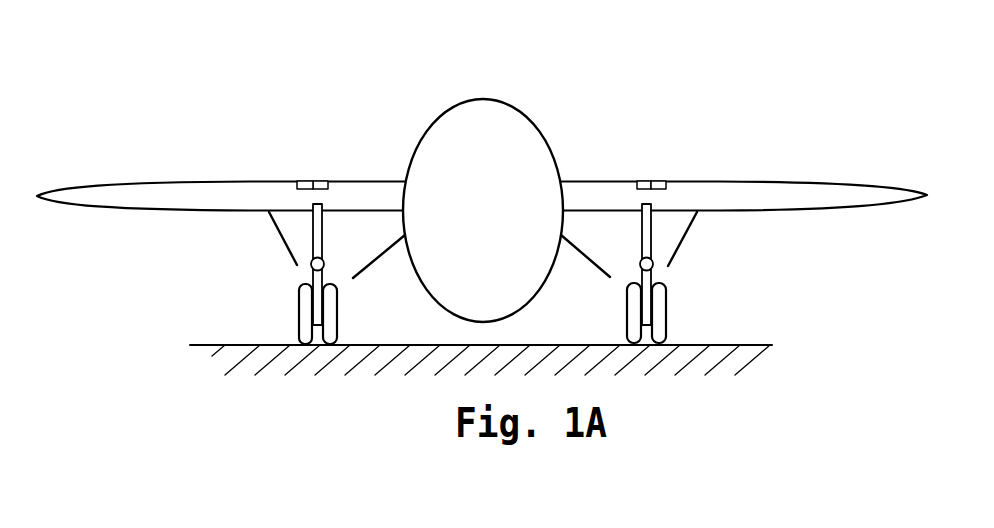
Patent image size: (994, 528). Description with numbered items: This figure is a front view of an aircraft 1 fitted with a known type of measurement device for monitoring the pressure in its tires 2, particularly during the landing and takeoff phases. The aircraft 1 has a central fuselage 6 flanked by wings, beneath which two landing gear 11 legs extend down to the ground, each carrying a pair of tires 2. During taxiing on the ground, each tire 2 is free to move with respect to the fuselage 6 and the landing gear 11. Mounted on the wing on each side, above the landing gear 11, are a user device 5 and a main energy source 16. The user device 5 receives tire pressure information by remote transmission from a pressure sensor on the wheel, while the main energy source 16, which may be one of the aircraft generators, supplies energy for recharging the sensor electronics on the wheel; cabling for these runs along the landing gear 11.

The aircraft 1 is at (584, 165).
The tire 2 is at (667, 312).
The user device 5 is at (320, 181).
The fuselage 6 is at (521, 108).
The landing gear 11 is at (654, 278).
The main energy source 16 is at (305, 181).